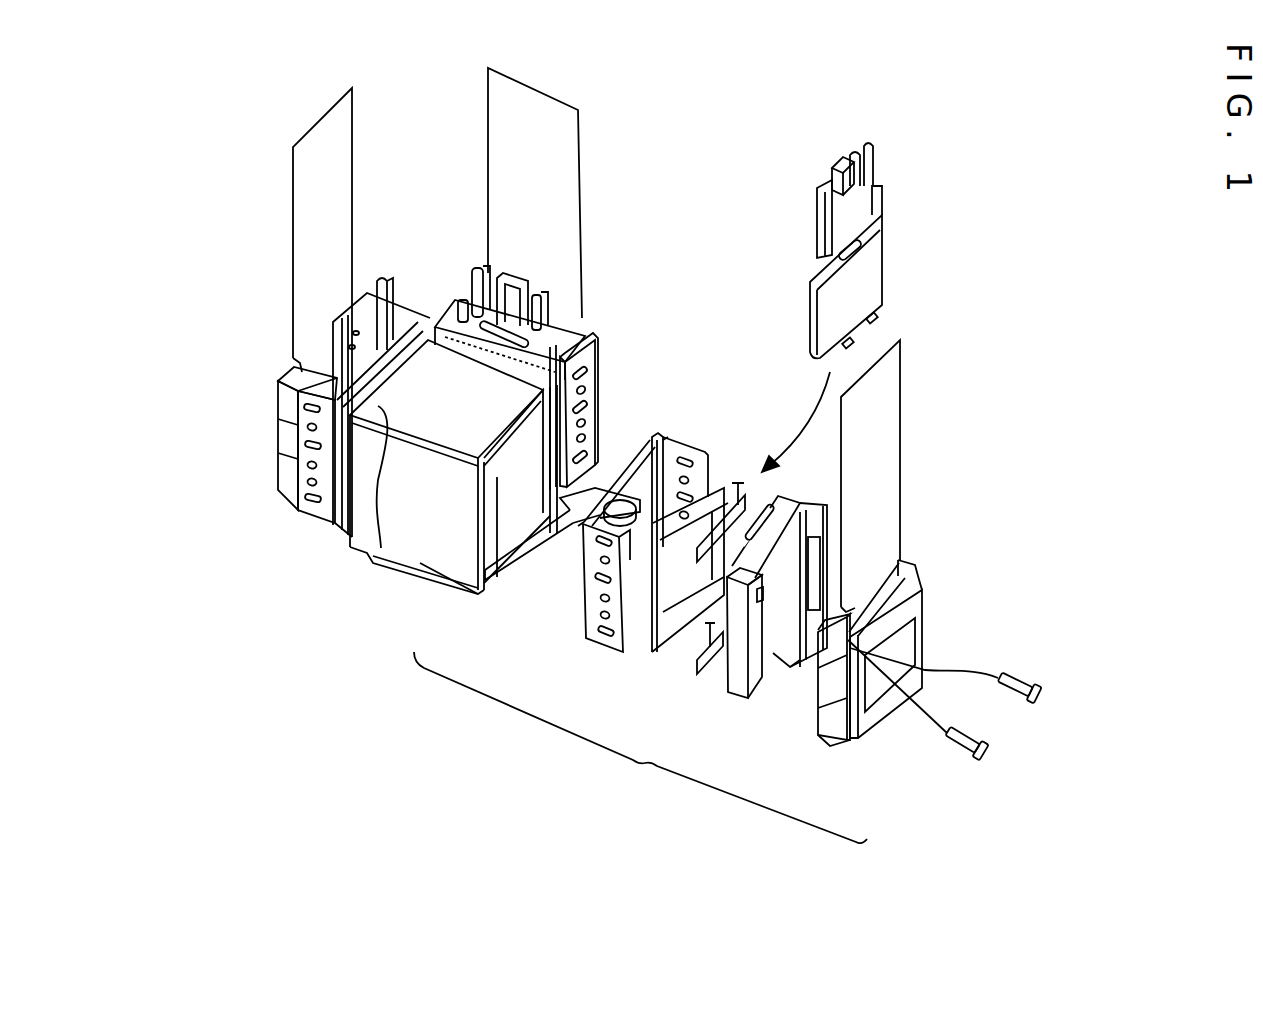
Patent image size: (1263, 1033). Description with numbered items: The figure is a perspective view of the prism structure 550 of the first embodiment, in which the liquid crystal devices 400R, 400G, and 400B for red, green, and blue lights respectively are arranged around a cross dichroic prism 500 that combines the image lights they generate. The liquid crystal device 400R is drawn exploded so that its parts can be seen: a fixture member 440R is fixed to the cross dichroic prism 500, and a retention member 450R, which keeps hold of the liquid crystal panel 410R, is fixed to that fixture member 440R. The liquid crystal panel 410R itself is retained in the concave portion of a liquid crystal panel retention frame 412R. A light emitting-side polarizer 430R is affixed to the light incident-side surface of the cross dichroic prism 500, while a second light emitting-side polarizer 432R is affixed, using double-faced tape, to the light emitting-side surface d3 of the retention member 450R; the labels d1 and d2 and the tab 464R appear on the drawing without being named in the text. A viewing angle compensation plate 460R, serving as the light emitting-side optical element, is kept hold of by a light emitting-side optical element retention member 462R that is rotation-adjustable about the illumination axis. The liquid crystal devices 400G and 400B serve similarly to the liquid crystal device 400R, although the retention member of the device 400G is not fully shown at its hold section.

The prism structure 550 is at (1134, 104).
The liquid crystal device 400B is at (268, 406).
The liquid crystal device 400G is at (603, 327).
The liquid crystal device 400R is at (640, 747).
The cross dichroic prism 500 is at (378, 557).
The liquid crystal panel 410R is at (875, 712).
The liquid crystal panel retention frame 412R is at (937, 545).
The light emitting-side polarizer 430R is at (500, 575).
The second light emitting-side polarizer 432R is at (667, 657).
The fixture member 440R is at (590, 657).
The retention member 450R is at (733, 707).
The viewing angle compensation plate 460R is at (886, 257).
The light emitting-side optical element retention member 462R is at (905, 182).
The tab portion 464R is at (834, 168).
The thickness d1 is at (687, 447).
The thickness d2 is at (727, 692).
The light emitting-side surface d3 is at (788, 497).